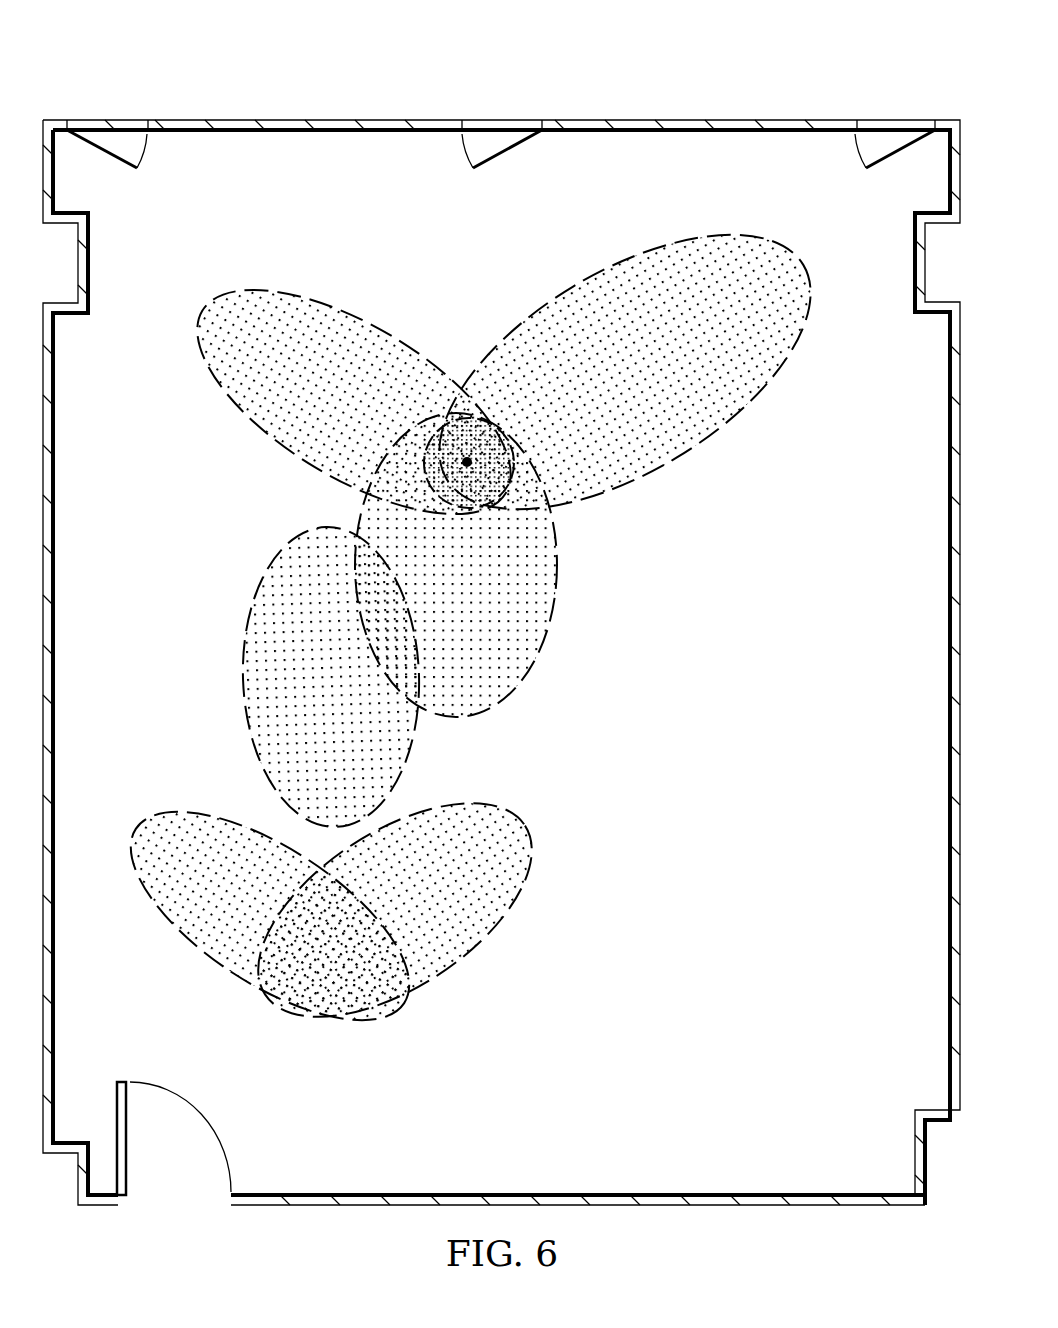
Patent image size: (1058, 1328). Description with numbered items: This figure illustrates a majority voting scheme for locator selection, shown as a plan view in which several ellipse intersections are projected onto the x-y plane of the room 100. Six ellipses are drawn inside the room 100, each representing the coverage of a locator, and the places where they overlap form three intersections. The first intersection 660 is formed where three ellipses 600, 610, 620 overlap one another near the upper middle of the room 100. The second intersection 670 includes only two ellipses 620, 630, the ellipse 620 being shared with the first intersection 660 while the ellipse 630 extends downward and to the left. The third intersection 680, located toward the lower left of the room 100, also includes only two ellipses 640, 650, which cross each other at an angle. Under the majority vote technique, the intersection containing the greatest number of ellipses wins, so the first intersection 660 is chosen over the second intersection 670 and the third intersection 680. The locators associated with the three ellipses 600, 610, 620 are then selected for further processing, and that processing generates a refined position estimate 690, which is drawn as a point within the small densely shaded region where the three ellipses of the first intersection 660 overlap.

The room 100 is at (318, 98).
The ellipse 600 is at (335, 432).
The ellipse 610 is at (638, 406).
The ellipse 620 is at (435, 597).
The ellipse 630 is at (309, 707).
The ellipse 640 is at (182, 905).
The ellipse 650 is at (438, 893).
The first intersection 660 is at (517, 482).
The second intersection 670 is at (393, 655).
The third intersection 680 is at (357, 967).
The refined position estimate 690 is at (468, 457).